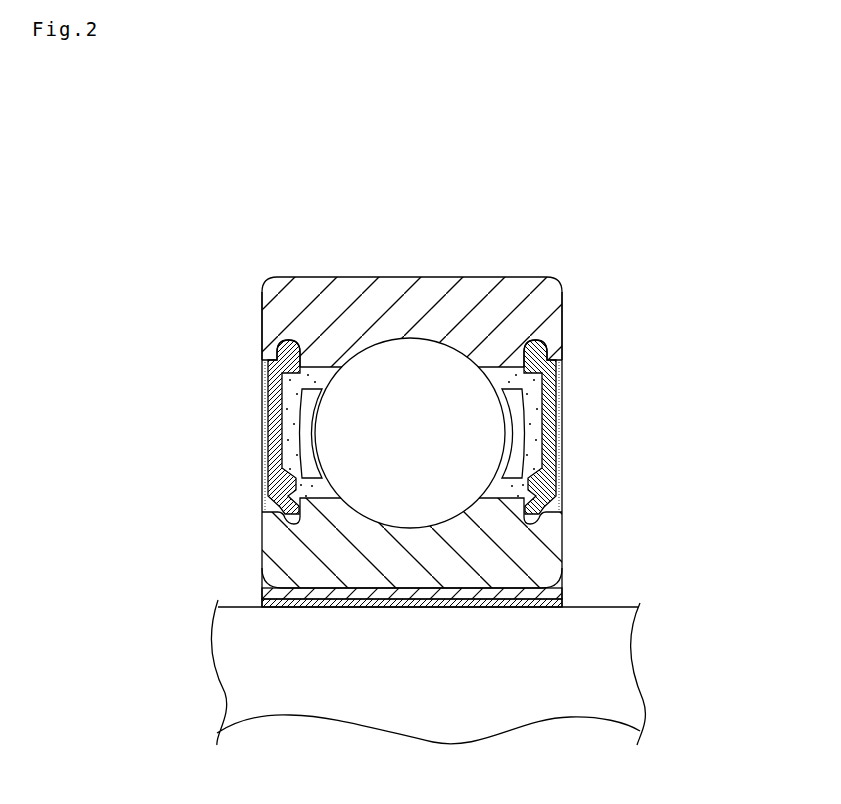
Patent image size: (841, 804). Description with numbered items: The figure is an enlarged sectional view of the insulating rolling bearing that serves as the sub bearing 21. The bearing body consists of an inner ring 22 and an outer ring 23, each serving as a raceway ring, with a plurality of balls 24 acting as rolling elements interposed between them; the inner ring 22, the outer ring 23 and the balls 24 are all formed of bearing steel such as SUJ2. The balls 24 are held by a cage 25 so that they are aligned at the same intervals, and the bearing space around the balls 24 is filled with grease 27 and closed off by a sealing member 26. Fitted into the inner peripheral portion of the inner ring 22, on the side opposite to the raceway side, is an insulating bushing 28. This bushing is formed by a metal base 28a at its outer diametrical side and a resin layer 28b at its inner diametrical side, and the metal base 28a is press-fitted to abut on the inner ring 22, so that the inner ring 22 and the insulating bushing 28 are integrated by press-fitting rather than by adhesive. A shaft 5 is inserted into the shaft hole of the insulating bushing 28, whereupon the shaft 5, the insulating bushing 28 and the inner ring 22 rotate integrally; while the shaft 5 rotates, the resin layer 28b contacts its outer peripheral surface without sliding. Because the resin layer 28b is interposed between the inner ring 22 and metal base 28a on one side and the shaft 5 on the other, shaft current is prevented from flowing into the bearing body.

The sub bearing 21 is at (271, 281).
The inner ring 22 is at (278, 538).
The outer ring 23 is at (535, 311).
The balls 24 is at (375, 356).
The cage 25 is at (302, 433).
The sealing member 26 is at (545, 350).
The grease 27 is at (290, 453).
The insulating bushing 28 is at (499, 499).
The metal base 28a is at (562, 597).
The resin layer 28b is at (562, 603).
The shaft 5 is at (612, 615).